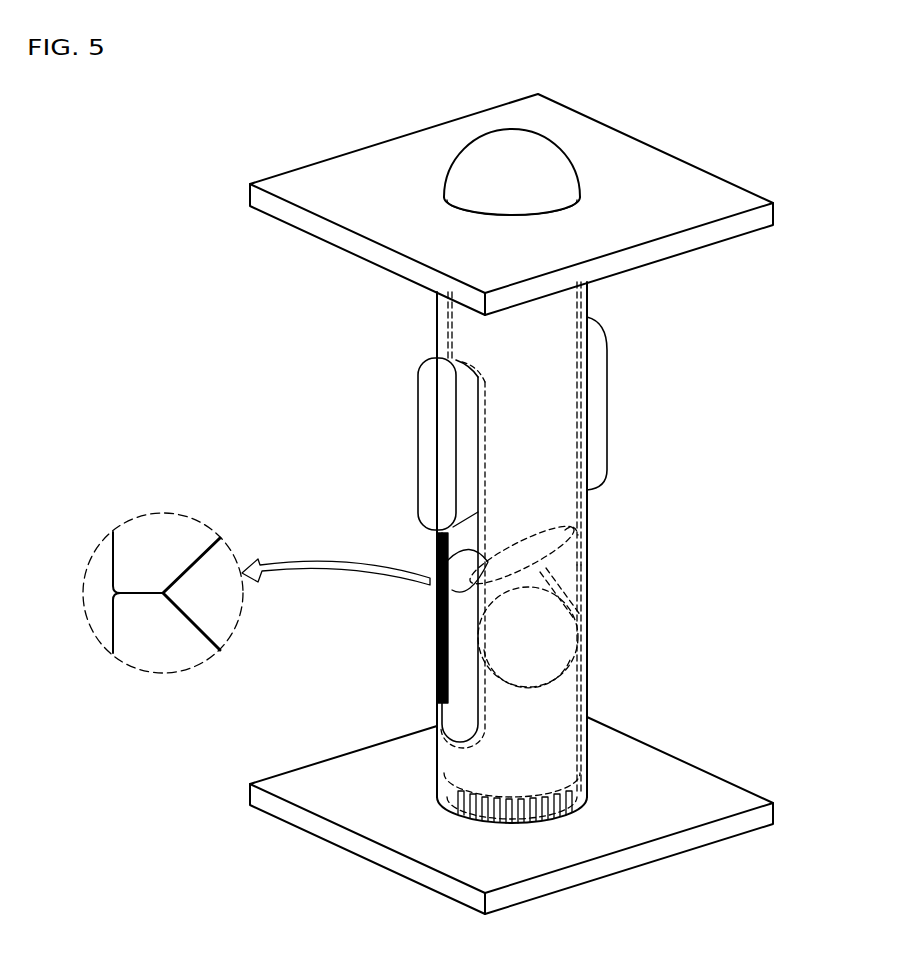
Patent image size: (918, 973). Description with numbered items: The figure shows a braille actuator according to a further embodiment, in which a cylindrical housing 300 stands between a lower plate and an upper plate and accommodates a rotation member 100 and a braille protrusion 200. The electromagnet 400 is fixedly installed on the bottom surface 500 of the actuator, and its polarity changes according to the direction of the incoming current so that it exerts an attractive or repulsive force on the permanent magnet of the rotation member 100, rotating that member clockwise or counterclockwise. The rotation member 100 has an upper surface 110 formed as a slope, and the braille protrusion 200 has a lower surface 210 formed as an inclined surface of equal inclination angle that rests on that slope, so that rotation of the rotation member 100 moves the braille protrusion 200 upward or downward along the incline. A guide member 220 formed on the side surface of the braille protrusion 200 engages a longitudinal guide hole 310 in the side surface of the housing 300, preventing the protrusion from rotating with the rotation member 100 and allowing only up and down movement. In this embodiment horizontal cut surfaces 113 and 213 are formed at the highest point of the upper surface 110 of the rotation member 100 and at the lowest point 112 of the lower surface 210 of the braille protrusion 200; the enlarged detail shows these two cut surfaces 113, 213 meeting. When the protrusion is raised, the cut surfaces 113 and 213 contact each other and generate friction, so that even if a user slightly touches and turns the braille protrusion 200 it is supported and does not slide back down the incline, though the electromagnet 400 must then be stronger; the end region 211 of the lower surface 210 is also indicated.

The rotation member 100 is at (450, 637).
The upper surface 110 is at (535, 635).
The lowest point 112 is at (573, 670).
The cut surface 113 is at (433, 543).
The braille protrusion 200 is at (537, 412).
The lower surface 210 is at (565, 555).
The pad end 211 is at (570, 528).
The cut surface 213 is at (500, 583).
The guide member 220 is at (437, 430).
The housing 300 is at (437, 312).
The guide hole 310 is at (478, 698).
The electromagnet 400 is at (450, 808).
The bottom surface 500 is at (699, 795).